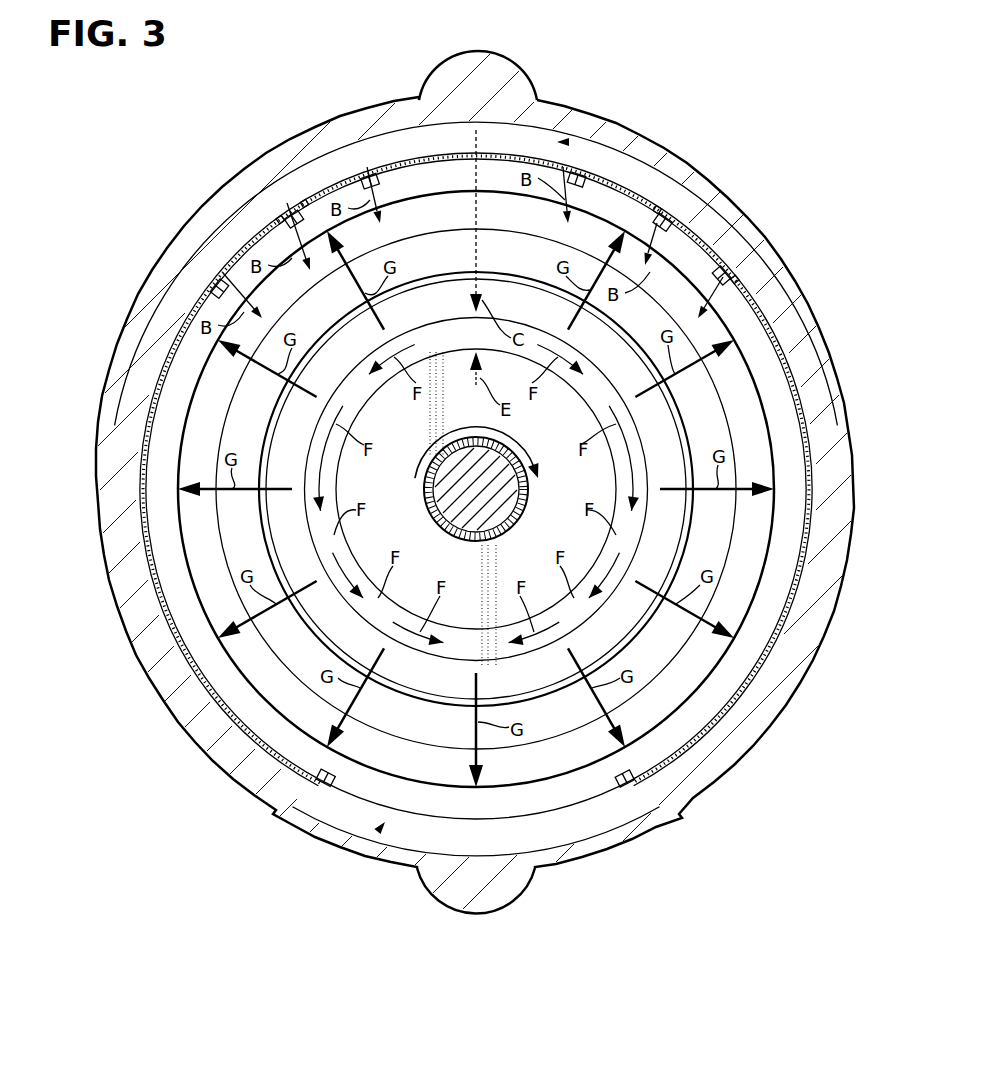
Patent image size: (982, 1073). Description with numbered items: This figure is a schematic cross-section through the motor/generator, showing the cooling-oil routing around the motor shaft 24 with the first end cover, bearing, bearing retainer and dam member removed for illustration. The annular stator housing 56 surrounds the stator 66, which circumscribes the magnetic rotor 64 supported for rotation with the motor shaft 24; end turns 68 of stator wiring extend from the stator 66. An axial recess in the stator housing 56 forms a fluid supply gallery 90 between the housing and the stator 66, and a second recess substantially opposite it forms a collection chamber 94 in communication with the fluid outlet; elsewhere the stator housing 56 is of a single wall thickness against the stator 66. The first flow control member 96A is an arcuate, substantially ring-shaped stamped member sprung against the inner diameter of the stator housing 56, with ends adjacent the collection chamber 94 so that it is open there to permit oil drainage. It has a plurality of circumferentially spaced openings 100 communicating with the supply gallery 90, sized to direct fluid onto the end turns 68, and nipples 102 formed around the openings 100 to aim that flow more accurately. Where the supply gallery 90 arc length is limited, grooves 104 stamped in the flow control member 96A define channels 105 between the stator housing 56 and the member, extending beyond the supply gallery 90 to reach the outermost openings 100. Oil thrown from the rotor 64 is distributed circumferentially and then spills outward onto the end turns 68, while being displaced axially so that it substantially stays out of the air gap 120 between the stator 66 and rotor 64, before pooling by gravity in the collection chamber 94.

The motor shaft 24 is at (443, 515).
The annular stator housing 56 is at (405, 112).
The magnetic rotor 64 is at (377, 538).
The stator 66 is at (235, 427).
The end turns 68 is at (215, 380).
The fluid supply gallery 90 is at (569, 142).
The collection chamber 94 is at (378, 831).
The first flow control member 96A is at (195, 292).
The openings 100 is at (370, 170).
The nipples 102 is at (378, 190).
The grooves 104 is at (298, 193).
The channels 105 is at (285, 205).
The air gap 120 is at (645, 632).